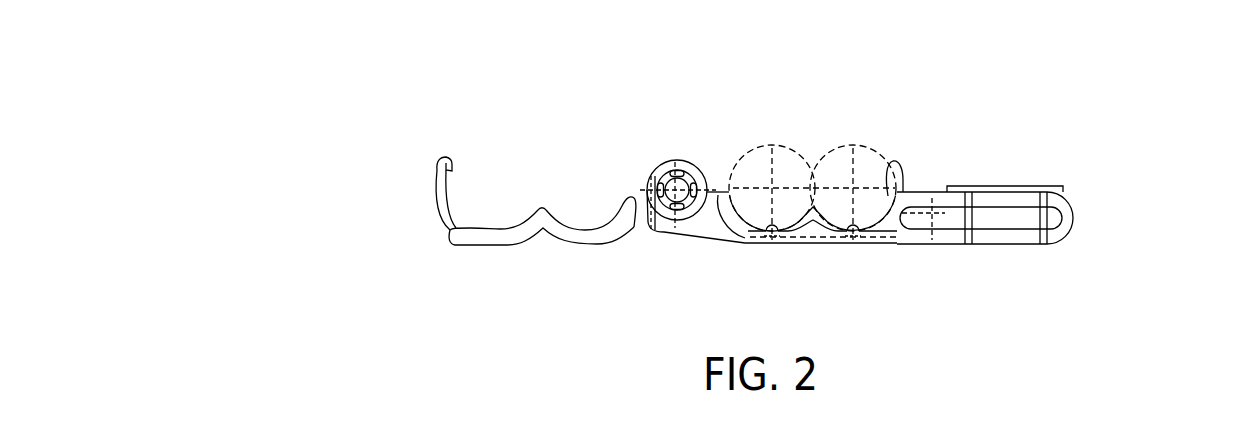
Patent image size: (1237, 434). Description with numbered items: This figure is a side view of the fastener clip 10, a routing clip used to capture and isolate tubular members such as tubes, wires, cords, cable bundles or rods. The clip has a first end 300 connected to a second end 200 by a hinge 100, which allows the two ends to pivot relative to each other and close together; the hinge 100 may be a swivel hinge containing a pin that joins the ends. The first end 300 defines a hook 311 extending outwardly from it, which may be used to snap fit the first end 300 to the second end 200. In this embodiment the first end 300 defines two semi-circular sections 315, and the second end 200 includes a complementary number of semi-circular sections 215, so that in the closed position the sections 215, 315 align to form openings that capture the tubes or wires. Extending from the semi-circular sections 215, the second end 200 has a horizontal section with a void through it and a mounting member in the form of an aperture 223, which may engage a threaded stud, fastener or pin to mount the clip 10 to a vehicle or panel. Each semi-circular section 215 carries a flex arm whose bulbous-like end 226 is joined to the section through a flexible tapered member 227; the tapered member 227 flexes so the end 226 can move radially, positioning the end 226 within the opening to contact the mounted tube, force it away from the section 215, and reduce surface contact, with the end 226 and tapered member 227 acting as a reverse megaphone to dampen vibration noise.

The fastener clip 10 is at (930, 102).
The hinge 100 is at (674, 160).
The second end 200 is at (892, 243).
The semi-circular sections 215 is at (785, 231).
The aperture 223 is at (1005, 210).
The bulbous-like end 226 is at (770, 238).
The flexible tapered member 227 is at (750, 231).
The first end 300 is at (467, 245).
The hook 311 is at (438, 190).
The semi-circular sections 315 is at (509, 228).